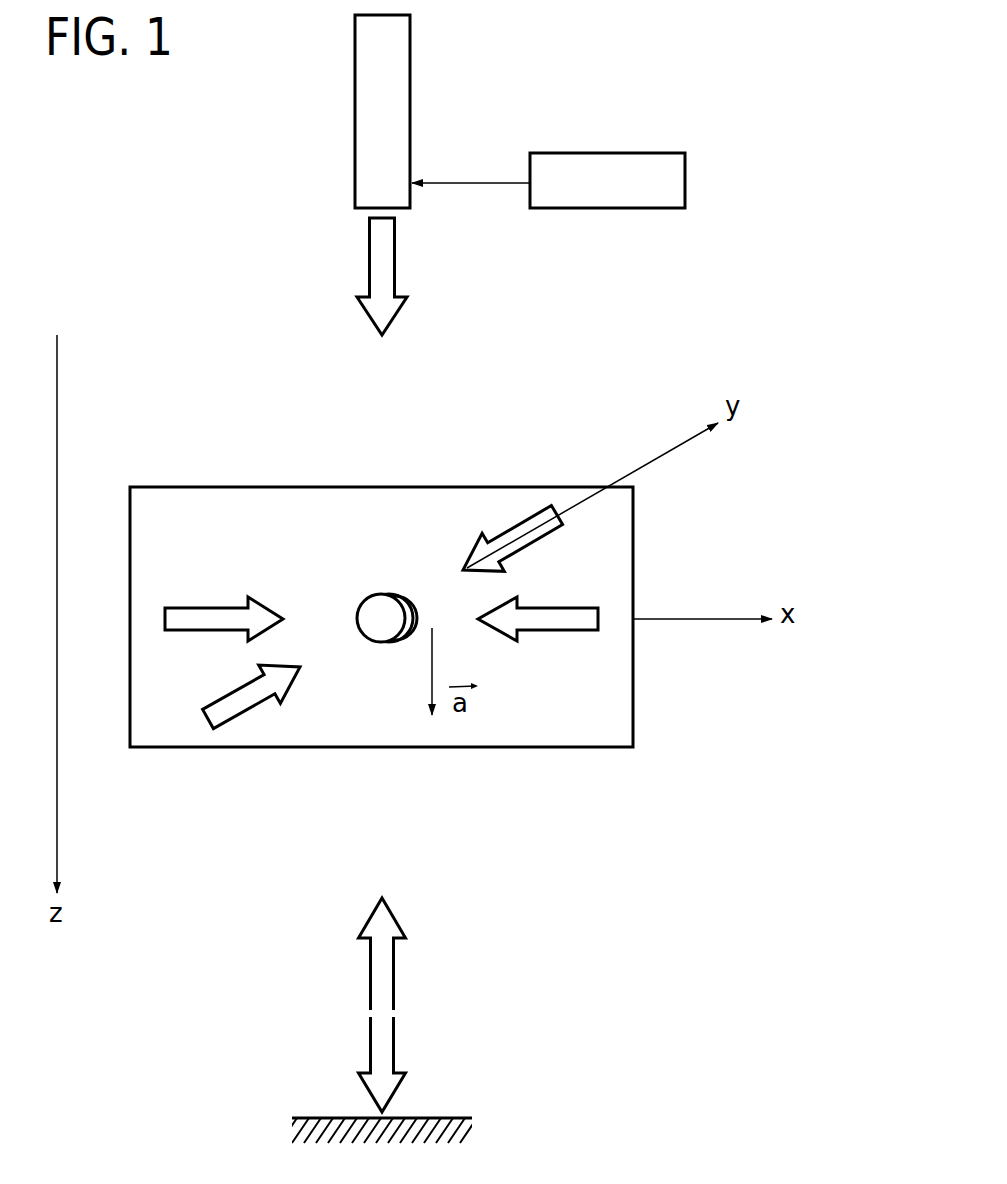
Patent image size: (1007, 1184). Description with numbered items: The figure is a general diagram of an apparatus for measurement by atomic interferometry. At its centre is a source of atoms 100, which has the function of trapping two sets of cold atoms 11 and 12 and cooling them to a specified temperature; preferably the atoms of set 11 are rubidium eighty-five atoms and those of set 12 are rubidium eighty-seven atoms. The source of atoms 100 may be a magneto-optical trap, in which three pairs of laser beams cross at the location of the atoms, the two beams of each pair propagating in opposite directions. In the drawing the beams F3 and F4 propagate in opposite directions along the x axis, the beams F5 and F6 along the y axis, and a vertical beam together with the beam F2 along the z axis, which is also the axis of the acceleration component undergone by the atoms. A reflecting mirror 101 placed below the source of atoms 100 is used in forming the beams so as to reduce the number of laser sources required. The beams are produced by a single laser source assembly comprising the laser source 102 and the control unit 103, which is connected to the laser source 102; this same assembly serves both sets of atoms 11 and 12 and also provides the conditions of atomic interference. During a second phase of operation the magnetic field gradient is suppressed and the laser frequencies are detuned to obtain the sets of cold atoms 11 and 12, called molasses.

The source of atoms 100 is at (227, 485).
The mirror 101 is at (435, 1118).
The laser source 102 is at (410, 57).
The control unit 103 is at (633, 150).
The set of cold atoms 11 is at (365, 603).
The set of cold atoms 12 is at (408, 597).
The laser beam F2 is at (395, 987).
The laser beam F3 is at (199, 608).
The laser beam F4 is at (563, 607).
The laser beam F5 is at (225, 697).
The laser beam F6 is at (512, 528).